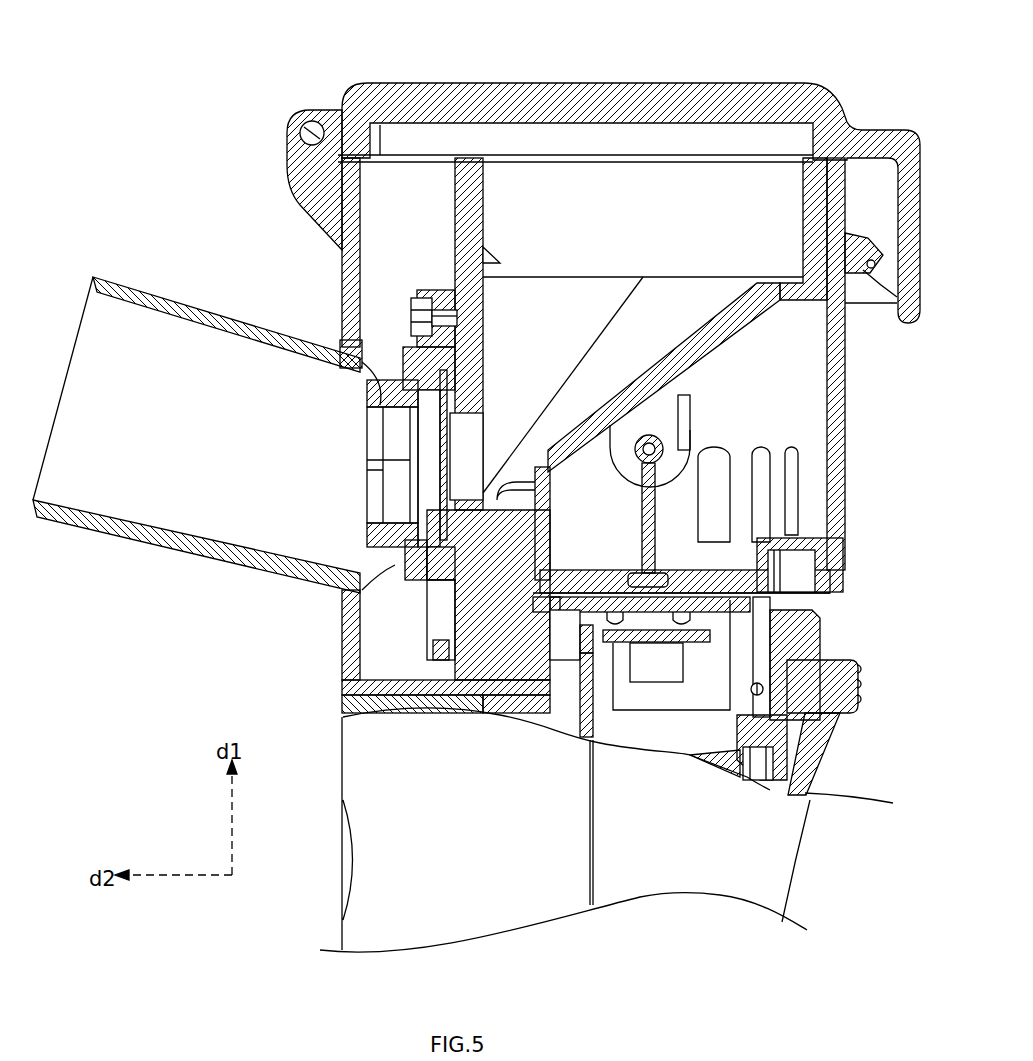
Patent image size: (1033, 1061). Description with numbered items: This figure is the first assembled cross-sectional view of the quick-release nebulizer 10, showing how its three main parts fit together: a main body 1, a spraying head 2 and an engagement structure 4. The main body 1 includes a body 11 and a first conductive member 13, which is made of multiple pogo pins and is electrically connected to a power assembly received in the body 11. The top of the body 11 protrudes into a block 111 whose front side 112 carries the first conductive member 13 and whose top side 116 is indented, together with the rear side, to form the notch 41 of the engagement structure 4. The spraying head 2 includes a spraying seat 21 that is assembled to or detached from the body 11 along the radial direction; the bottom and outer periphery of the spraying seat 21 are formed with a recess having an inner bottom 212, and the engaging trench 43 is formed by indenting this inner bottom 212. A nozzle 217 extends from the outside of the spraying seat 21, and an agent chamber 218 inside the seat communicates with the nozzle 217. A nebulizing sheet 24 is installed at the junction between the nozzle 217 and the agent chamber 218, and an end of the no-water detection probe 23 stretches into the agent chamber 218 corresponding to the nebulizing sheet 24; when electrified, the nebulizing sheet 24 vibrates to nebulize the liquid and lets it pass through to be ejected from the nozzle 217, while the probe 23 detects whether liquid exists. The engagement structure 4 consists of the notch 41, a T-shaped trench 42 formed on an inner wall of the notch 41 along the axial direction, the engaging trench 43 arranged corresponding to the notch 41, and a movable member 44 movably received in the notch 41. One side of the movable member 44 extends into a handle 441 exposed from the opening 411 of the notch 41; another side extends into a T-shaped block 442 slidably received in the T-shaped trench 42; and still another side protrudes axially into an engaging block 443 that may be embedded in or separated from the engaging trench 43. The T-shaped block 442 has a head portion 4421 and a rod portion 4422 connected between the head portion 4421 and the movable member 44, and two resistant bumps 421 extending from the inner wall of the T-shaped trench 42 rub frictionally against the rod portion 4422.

The main body 1 is at (796, 874).
The body 11 is at (777, 847).
The first conductive member 13 is at (560, 698).
The block 111 is at (559, 582).
The front side 112 is at (525, 712).
The top side 116 is at (577, 590).
The spraying head 2 is at (850, 428).
The spraying seat 21 is at (847, 392).
The inner bottom 212 is at (710, 617).
The nozzle 217 is at (130, 532).
The agent chamber 218 is at (577, 300).
The no-water detection probe 23 is at (505, 697).
The nebulizing sheet 24 is at (443, 442).
The engagement structure 4 is at (866, 692).
The notch 41 is at (824, 608).
The opening 411 is at (822, 623).
The T-shaped trench 42 is at (740, 667).
The resistant bumps 421 is at (764, 690).
The engaging trench 43 is at (803, 563).
The movable member 44 is at (800, 722).
The handle 441 is at (830, 668).
The T-shaped block 442 is at (713, 802).
The engaging block 443 is at (800, 642).
The head portion 4421 is at (735, 762).
The rod portion 4422 is at (757, 752).
The nebulizer 10 is at (502, 23).